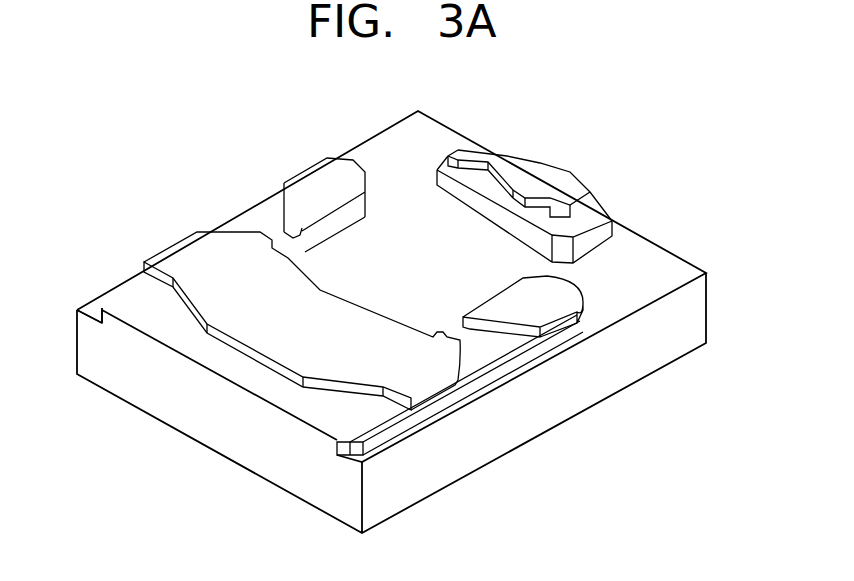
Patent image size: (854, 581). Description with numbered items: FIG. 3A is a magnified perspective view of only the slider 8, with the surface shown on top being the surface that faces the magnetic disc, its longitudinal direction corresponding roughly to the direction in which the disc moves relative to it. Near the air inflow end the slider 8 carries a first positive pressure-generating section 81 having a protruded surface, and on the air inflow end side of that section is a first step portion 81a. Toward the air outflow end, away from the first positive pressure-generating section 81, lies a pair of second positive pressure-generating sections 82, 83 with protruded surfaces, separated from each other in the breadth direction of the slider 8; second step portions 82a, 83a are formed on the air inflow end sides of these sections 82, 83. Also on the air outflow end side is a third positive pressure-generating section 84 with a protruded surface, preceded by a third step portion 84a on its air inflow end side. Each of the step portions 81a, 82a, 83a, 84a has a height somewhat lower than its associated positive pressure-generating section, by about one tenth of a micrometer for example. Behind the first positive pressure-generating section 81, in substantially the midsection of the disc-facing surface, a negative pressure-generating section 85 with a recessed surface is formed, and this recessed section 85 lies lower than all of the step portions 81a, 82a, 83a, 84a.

The slider 8 is at (700, 219).
The first positive pressure-generating section 81 is at (213, 275).
The first step portion 81a is at (137, 293).
The second positive pressure-generating section 82 is at (327, 183).
The second step portion 82a is at (270, 227).
The second positive pressure-generating section 83 is at (545, 295).
The second step portion 83a is at (490, 355).
The third positive pressure-generating section 84 is at (555, 187).
The third step portion 84a is at (482, 185).
The negative pressure-generating section 85 is at (397, 283).